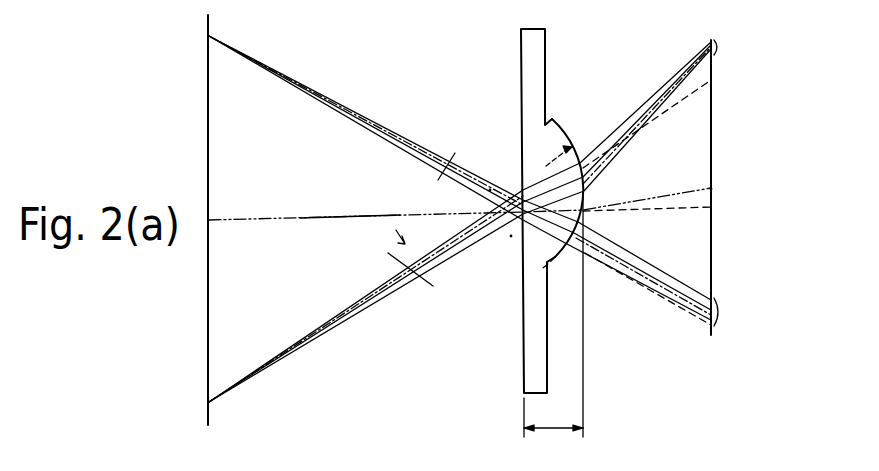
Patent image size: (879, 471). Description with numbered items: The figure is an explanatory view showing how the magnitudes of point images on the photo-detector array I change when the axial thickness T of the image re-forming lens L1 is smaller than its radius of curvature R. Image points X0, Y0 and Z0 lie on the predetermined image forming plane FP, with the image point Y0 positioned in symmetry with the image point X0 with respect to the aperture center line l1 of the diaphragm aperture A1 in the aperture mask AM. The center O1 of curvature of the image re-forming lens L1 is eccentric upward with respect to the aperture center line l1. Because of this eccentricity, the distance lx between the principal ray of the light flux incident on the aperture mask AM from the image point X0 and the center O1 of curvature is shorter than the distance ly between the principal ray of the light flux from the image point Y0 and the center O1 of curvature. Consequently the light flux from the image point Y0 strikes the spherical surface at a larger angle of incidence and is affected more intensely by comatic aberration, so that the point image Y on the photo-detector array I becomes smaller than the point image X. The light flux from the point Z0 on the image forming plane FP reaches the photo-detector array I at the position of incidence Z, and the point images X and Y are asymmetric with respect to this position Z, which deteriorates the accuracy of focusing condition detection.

The predetermined image forming plane FP is at (207, 88).
The image point X0 is at (209, 38).
The image point Y0 is at (213, 400).
The point on the predetermined image forming plane Z0 is at (210, 218).
The aperture center line l1 is at (297, 218).
The distance lx is at (447, 166).
The distance ly is at (420, 255).
The aperture mask AM is at (522, 77).
The image re-forming lens L1 is at (549, 117).
The radius of curvature R is at (549, 151).
The center of curvature O1 is at (490, 190).
The diaphragm aperture A1 is at (511, 236).
The axial thickness T is at (571, 314).
The photo-detector array I is at (712, 143).
The point image Y is at (720, 44).
The position of incidence Z is at (712, 189).
The point image X is at (722, 312).